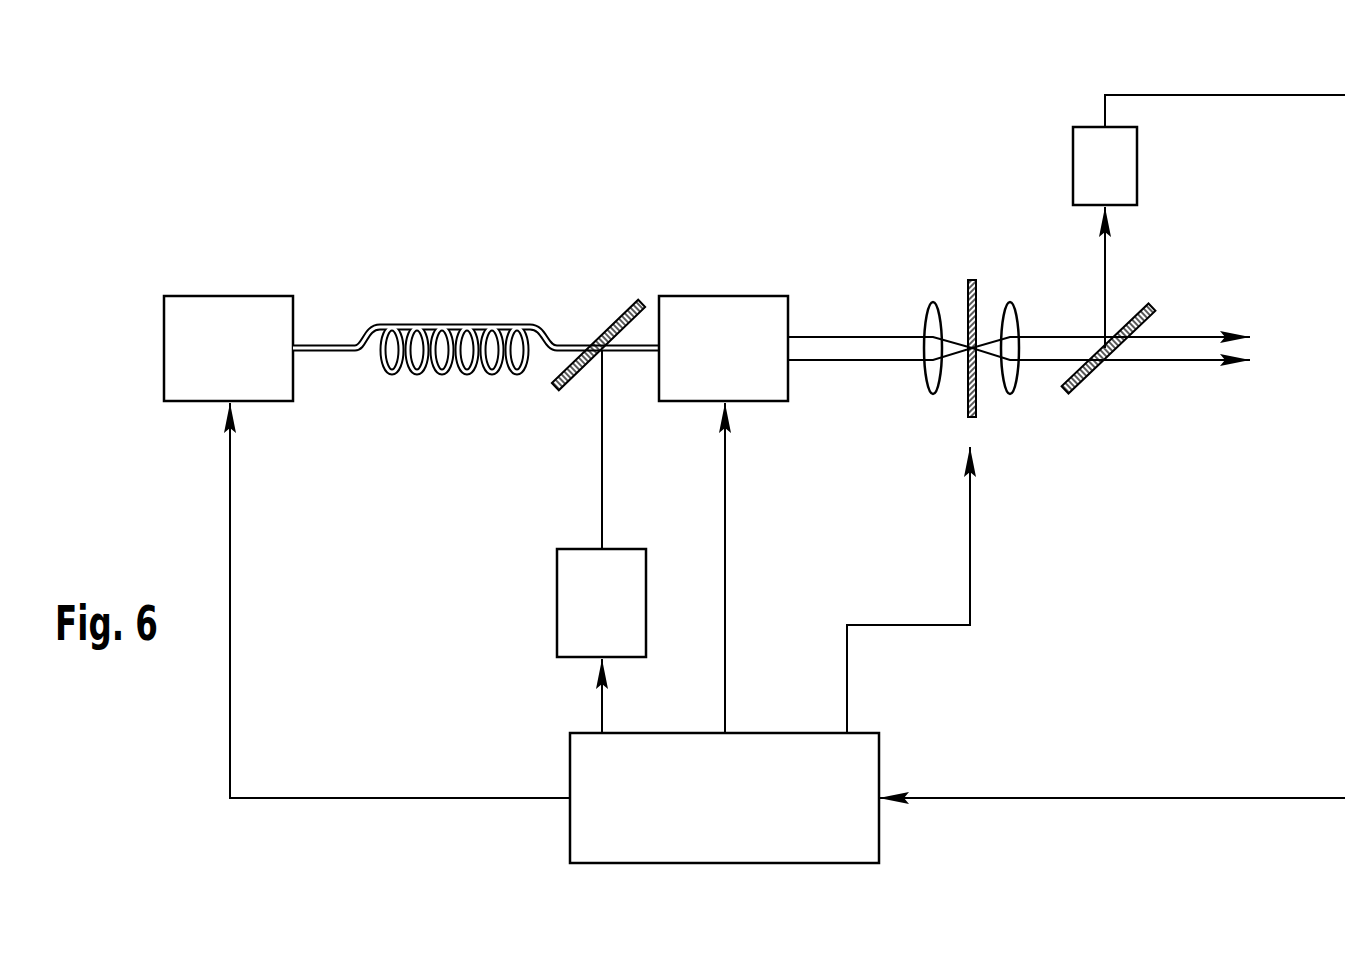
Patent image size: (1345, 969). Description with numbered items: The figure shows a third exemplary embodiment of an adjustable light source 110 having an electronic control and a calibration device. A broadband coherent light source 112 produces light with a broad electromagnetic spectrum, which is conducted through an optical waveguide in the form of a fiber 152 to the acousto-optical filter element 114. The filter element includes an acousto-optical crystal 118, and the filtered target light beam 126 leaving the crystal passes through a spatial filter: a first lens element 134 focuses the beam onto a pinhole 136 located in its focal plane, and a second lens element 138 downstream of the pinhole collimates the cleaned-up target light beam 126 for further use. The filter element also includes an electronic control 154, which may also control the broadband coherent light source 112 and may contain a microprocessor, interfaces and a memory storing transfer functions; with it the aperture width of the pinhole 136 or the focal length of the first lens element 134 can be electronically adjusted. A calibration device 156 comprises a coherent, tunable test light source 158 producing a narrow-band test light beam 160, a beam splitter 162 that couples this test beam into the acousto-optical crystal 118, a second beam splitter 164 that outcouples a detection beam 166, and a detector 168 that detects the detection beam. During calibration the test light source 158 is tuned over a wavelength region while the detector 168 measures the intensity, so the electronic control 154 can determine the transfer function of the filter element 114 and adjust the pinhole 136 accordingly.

The adjustable light source 110 is at (532, 160).
The broadband coherent light source 112 is at (250, 364).
The acousto-optical filter element 114 is at (947, 162).
The acousto-optical crystal 118 is at (745, 364).
The target light beam 126 is at (853, 362).
The first lens element 134 is at (928, 305).
The pinhole 136 is at (969, 282).
The second lens element 138 is at (1013, 305).
The fiber 152 is at (430, 325).
The electronic control 154 is at (745, 813).
The calibration device 156 is at (1103, 507).
The test light source 158 is at (557, 604).
The test light beam 160 is at (602, 502).
The beam splitter 162 is at (622, 315).
The second beam splitter 164 is at (1085, 393).
The detection beam 166 is at (1105, 278).
The detector 168 is at (1080, 160).